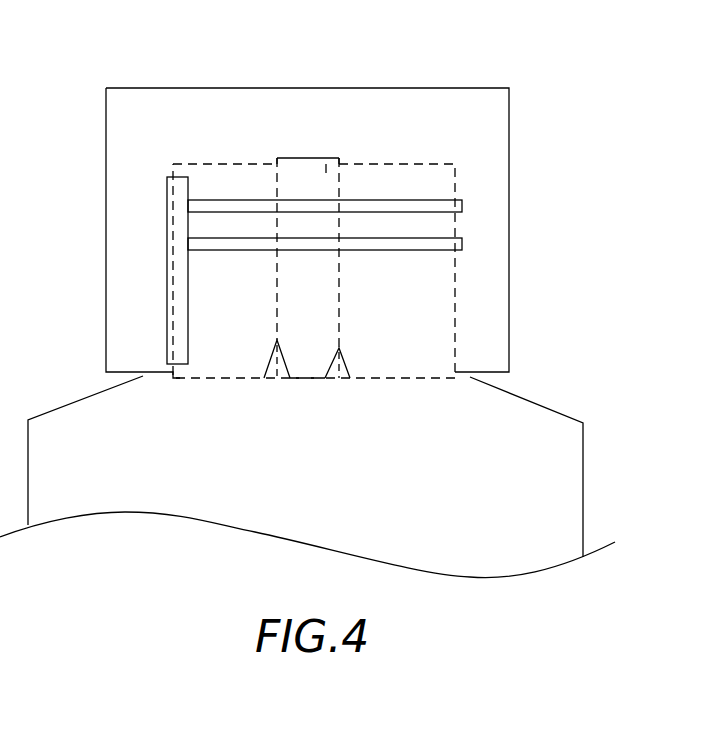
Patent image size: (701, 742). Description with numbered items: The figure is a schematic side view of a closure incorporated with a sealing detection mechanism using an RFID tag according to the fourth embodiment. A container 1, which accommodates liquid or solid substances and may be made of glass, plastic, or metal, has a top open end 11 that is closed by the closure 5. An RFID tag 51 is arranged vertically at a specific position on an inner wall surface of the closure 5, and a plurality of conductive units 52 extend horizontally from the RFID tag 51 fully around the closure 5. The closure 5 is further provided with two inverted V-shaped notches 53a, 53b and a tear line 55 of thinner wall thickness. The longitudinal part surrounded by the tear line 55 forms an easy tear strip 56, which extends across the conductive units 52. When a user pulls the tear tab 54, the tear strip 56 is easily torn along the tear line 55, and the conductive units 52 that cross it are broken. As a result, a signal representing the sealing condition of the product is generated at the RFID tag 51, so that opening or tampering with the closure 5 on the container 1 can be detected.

The container 1 is at (577, 487).
The closure 5 is at (176, 88).
The top open end 11 is at (426, 163).
The RFID tag 51 is at (178, 207).
The conductive units 52 is at (455, 204).
The inverted V-shaped notch 53a is at (263, 380).
The inverted V-shaped notch 53b is at (352, 380).
The tear tab 54 is at (307, 380).
The tear line 55 is at (282, 160).
The easy tear strip 56 is at (328, 177).